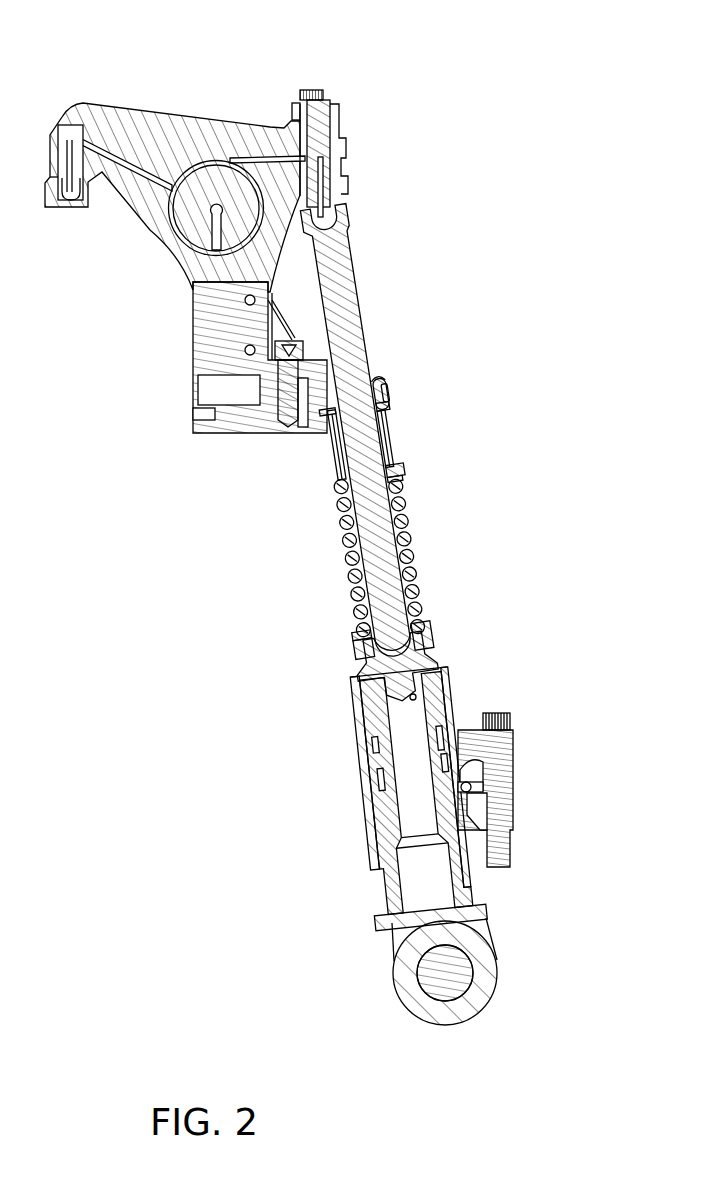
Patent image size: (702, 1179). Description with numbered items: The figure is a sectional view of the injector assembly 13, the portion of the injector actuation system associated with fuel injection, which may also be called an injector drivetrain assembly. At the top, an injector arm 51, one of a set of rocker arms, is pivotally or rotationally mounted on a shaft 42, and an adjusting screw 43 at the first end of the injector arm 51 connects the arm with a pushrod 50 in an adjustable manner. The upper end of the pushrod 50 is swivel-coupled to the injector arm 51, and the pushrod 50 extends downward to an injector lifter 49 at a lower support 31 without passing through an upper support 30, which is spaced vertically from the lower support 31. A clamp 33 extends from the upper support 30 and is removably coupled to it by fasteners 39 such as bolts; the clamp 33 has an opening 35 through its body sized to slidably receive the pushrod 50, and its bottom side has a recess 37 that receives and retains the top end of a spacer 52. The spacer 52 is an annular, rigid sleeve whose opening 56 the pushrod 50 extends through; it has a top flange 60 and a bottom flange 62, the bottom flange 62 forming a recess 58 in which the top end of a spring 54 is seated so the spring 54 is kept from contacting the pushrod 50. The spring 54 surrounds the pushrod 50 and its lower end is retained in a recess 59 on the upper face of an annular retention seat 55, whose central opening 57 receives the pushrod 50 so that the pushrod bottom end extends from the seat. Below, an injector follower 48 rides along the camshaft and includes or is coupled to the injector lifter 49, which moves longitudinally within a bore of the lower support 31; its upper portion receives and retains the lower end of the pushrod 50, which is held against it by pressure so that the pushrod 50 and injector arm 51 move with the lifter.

The injector assembly 13 is at (473, 288).
The upper support 30 is at (193, 420).
The lower support 31 is at (373, 833).
The clamp 33 is at (373, 380).
The opening 35 is at (373, 375).
The recess 37 is at (393, 405).
The fastener 39 is at (289, 400).
The shaft 42 is at (193, 223).
The adjusting screw 43 is at (308, 90).
The injector follower 48 is at (468, 945).
The injector lifter 49 is at (433, 665).
The pushrod 50 is at (336, 278).
The injector arm 51 is at (173, 137).
The spacer 52 is at (390, 438).
The spring 54 is at (410, 550).
The retention seat 55 is at (355, 643).
The opening 56 is at (333, 455).
The opening 57 is at (433, 622).
The recess 58 is at (403, 477).
The recess 59 is at (353, 628).
The top flange 60 is at (391, 394).
The bottom flange 62 is at (405, 470).